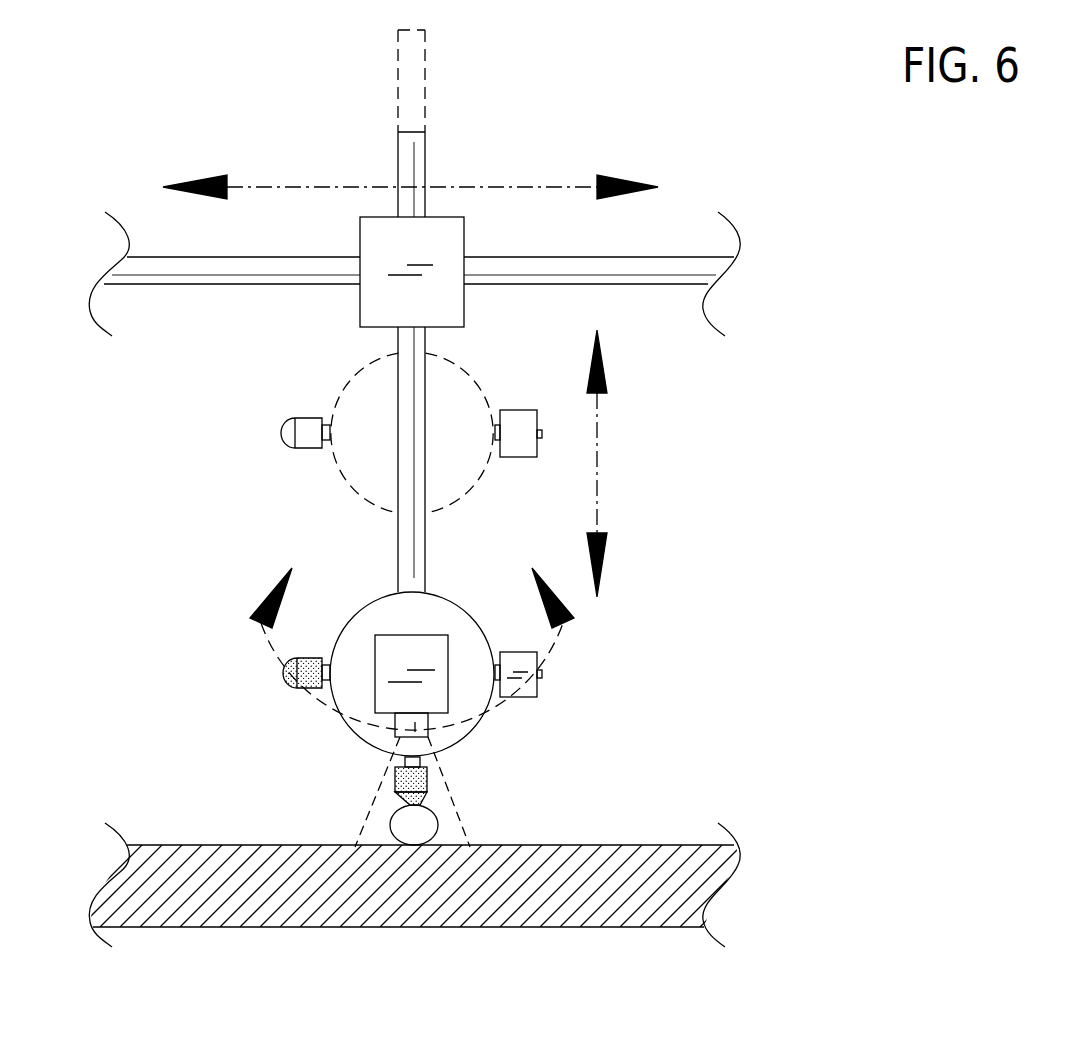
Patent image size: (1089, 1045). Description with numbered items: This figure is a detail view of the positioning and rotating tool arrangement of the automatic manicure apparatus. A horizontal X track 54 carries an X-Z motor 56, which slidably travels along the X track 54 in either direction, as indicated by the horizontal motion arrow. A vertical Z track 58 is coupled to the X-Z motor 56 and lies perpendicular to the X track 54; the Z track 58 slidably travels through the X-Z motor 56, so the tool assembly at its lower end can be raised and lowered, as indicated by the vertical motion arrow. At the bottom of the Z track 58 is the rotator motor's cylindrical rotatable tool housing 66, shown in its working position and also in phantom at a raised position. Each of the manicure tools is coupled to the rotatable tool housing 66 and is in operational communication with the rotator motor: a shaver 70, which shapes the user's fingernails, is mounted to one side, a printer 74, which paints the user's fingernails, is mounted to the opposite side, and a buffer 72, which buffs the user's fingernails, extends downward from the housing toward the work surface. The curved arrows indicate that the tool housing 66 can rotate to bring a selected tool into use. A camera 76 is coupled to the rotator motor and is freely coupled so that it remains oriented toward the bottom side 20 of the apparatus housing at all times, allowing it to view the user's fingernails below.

The bottom side 20 is at (568, 893).
The X track 54 is at (664, 268).
The X-Z motor 56 is at (435, 240).
The Z track 58 is at (420, 540).
The rotatable tool housing 66 is at (373, 602).
The shaver 70 is at (285, 687).
The buffer 72 is at (427, 783).
The printer 74 is at (525, 687).
The camera 76 is at (398, 660).